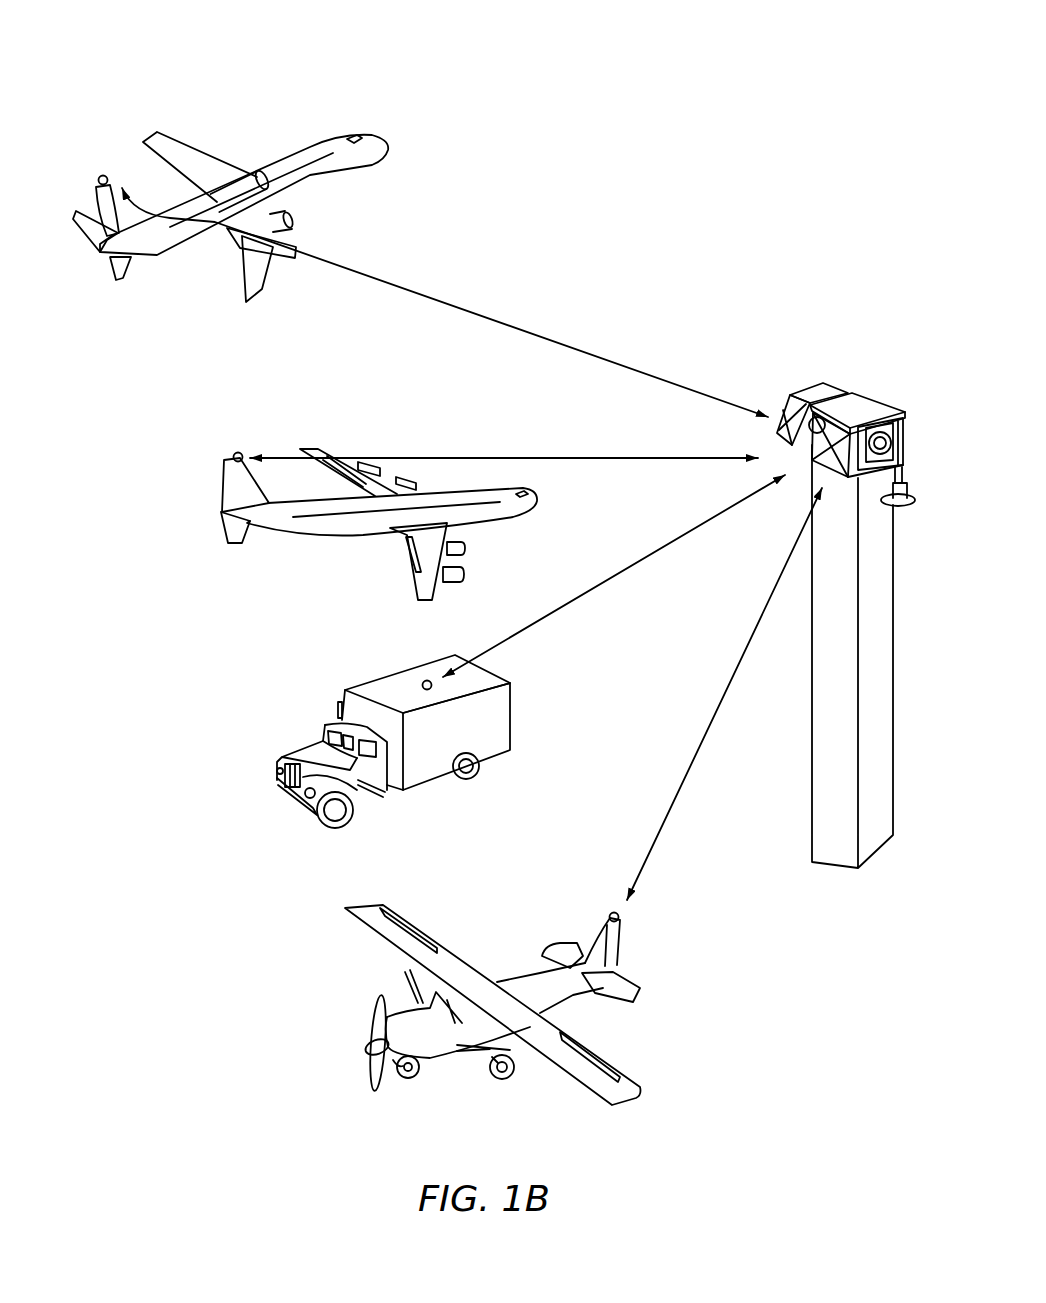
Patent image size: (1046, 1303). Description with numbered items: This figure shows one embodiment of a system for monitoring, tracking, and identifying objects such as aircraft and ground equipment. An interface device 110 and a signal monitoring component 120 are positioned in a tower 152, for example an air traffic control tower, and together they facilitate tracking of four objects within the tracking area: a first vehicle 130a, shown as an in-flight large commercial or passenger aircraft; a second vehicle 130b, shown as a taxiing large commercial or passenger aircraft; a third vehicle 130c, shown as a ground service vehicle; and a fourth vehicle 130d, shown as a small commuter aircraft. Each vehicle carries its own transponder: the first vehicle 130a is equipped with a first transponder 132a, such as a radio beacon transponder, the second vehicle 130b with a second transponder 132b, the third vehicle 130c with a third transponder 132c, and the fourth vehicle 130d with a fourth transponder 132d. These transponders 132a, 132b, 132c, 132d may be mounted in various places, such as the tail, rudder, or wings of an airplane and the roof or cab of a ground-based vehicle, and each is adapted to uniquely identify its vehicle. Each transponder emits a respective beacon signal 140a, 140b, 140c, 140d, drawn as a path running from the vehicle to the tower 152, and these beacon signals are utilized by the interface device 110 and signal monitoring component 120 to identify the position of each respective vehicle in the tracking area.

The interface device 110 is at (837, 416).
The signal monitoring component 120 is at (810, 390).
The first object or vehicle 130a is at (272, 146).
The second object or vehicle 130b is at (284, 552).
The third object or vehicle 130c is at (277, 815).
The fourth object or vehicle 130d is at (353, 1092).
The first transponder 132a is at (101, 166).
The second transponder 132b is at (231, 451).
The third transponder 132c is at (417, 680).
The fourth transponder 132d is at (612, 901).
The beacon signal 140a is at (512, 326).
The beacon signal 140b is at (530, 457).
The beacon signal 140c is at (615, 572).
The beacon signal 140d is at (714, 707).
The tower 152 is at (870, 675).